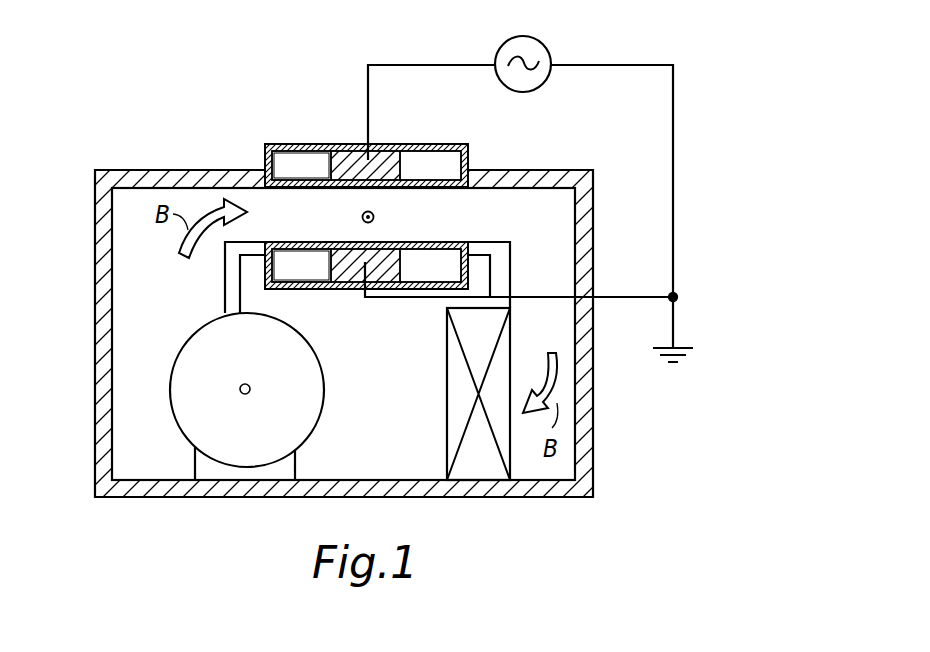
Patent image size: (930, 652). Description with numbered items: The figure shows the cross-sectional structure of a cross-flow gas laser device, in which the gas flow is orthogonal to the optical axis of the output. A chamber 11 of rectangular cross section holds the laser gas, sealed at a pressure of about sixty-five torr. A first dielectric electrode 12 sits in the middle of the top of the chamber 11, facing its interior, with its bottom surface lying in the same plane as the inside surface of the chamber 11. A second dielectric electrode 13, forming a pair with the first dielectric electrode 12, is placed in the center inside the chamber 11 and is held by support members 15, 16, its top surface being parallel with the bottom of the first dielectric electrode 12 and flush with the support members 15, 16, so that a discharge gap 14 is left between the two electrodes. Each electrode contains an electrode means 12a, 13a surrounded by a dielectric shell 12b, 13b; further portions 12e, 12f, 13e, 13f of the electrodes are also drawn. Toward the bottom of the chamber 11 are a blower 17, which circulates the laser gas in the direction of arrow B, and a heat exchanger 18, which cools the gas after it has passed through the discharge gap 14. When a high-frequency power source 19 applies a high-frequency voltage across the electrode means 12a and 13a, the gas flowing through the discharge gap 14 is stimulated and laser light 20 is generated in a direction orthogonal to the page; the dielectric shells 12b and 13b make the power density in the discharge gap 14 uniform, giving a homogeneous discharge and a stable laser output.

The chamber 11 is at (95, 325).
The first dielectric electrode 12 is at (338, 123).
The electrode means of the first dielectric electrode 12a is at (387, 147).
The dielectric shell of the first dielectric electrode 12b is at (262, 160).
The upper electrode dielectric 12e is at (290, 155).
The upper electrode right dielectric chamber 12f is at (440, 152).
The second dielectric electrode 13 is at (320, 285).
The electrode means of the second dielectric electrode 13a is at (372, 265).
The dielectric shell of the second dielectric electrode 13b is at (263, 277).
The lower electrode dielectric 13e is at (307, 274).
The lower electrode right dielectric chamber 13f is at (432, 258).
The discharge gap 14 is at (410, 218).
The support member 15 is at (225, 270).
The support member 16 is at (512, 262).
The blower 17 is at (172, 398).
The heat exchanger 18 is at (447, 432).
The high-frequency power source 19 is at (543, 43).
The laser light 20 is at (362, 216).